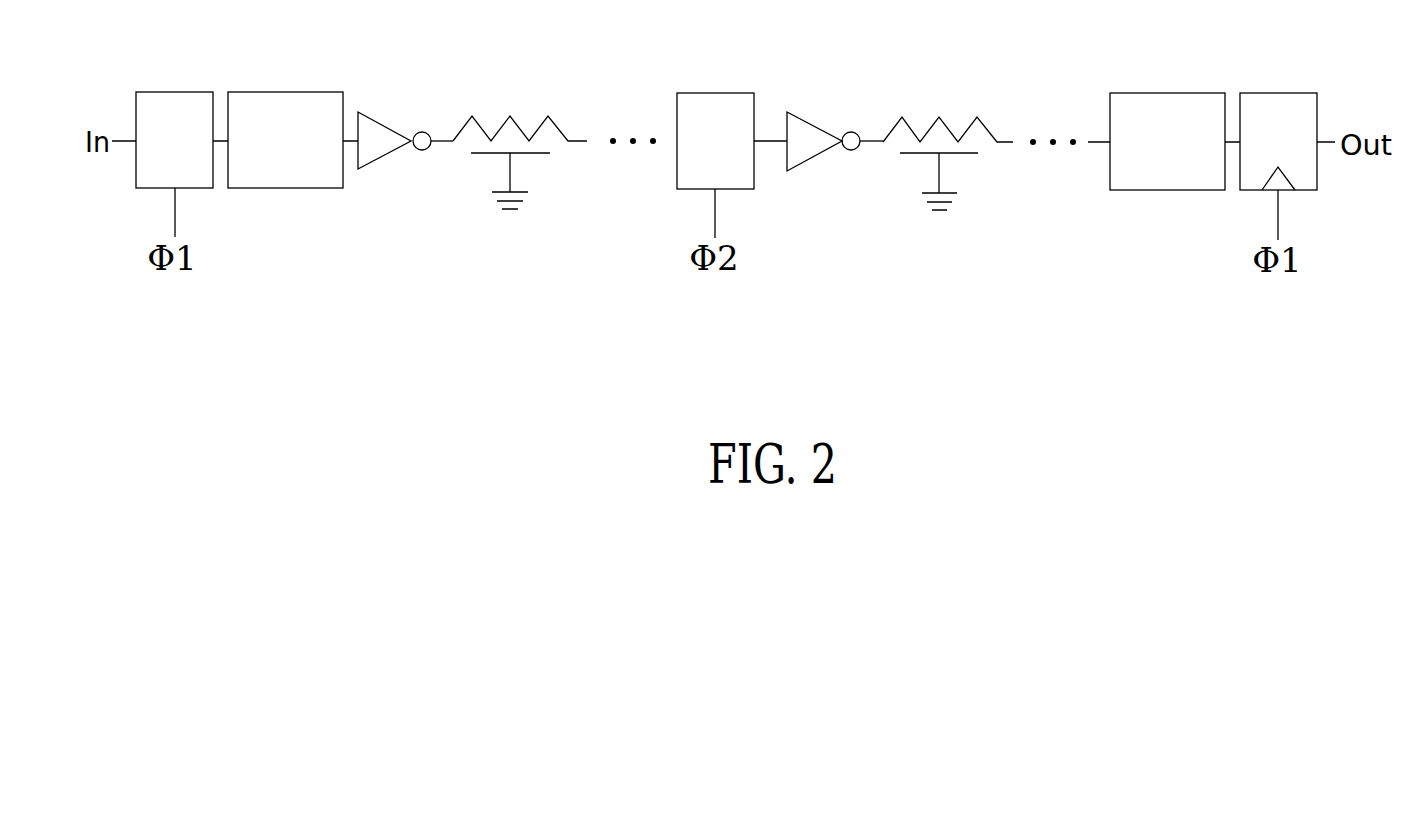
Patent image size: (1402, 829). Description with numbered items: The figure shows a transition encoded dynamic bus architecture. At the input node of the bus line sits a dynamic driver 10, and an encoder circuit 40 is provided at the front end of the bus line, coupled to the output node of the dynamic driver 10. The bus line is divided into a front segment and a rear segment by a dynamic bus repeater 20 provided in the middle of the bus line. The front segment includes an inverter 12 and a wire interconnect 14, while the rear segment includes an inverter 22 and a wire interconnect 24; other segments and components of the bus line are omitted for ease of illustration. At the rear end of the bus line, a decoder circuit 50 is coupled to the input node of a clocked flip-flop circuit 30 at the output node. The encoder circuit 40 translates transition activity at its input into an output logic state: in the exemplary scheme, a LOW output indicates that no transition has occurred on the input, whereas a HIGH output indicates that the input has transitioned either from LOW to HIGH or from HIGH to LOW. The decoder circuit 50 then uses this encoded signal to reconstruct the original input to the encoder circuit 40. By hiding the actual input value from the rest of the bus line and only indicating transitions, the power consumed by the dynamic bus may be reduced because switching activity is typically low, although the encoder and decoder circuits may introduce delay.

The dynamic driver 10 is at (170, 92).
The encoder circuit 40 is at (300, 92).
The inverter 12 is at (383, 123).
The wire interconnect 14 is at (520, 98).
The dynamic bus repeater 20 is at (713, 93).
The inverter 22 is at (810, 120).
The wire interconnect 24 is at (948, 100).
The decoder circuit 50 is at (1185, 93).
The flip-flop circuit 30 is at (1277, 93).